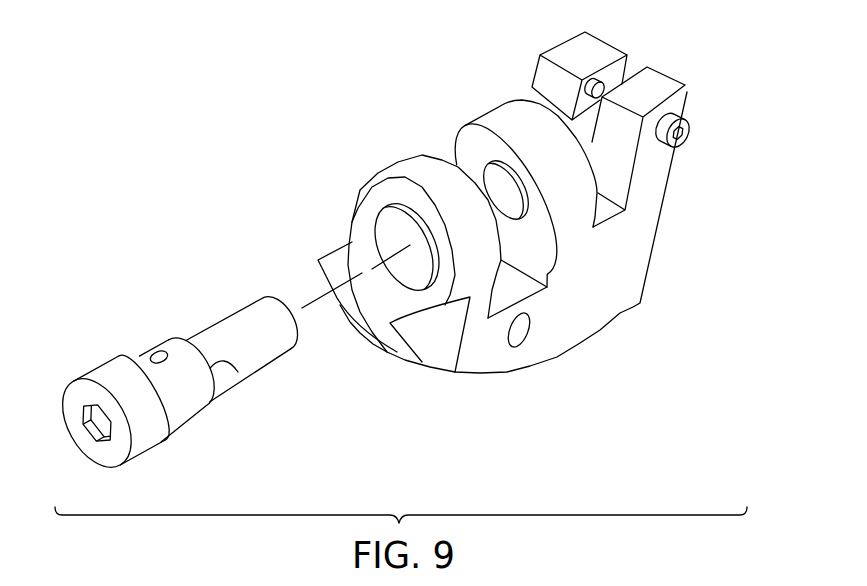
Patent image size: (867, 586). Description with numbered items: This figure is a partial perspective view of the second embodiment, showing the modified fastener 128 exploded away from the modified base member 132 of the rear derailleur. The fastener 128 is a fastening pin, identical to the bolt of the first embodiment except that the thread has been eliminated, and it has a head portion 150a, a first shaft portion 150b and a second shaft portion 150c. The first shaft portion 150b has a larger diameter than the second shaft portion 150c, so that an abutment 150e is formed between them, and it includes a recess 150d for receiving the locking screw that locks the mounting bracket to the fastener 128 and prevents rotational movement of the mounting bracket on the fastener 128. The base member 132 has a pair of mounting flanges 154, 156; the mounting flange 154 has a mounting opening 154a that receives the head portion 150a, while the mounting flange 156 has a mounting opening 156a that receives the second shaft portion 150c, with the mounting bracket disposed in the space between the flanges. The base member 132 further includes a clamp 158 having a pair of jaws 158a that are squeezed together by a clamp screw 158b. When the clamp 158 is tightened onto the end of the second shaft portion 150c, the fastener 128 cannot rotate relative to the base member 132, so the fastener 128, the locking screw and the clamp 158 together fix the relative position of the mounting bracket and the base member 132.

The fastener 128 is at (92, 364).
The head portion 150a is at (150, 457).
The first shaft portion 150b is at (194, 420).
The second shaft portion 150c is at (230, 313).
The recess 150d is at (157, 353).
The abutment 150e is at (238, 373).
The base member 132 is at (653, 268).
The mounting flange 154 is at (397, 163).
The mounting opening 154a is at (395, 223).
The mounting flange 156 is at (496, 108).
The mounting opening 156a is at (505, 176).
The clamp 158 is at (682, 73).
The jaws 158a is at (598, 38).
The clamp screw 158b is at (688, 136).